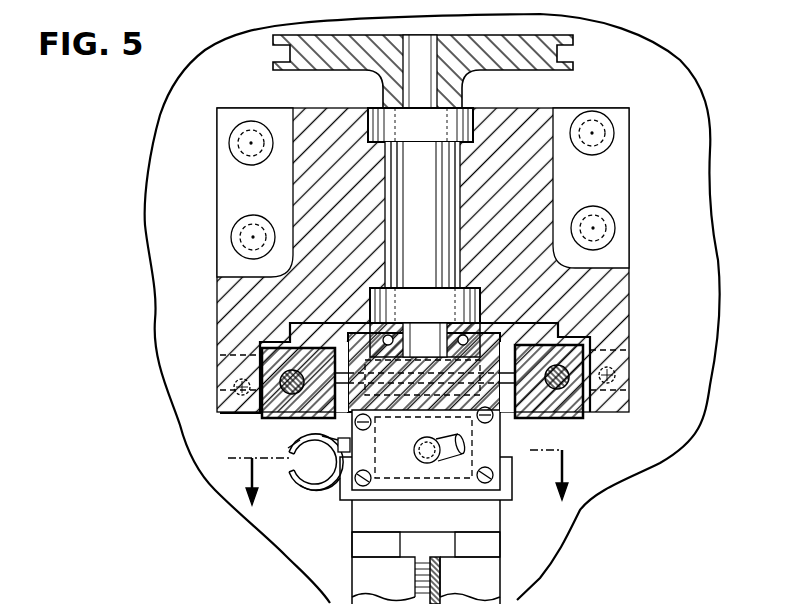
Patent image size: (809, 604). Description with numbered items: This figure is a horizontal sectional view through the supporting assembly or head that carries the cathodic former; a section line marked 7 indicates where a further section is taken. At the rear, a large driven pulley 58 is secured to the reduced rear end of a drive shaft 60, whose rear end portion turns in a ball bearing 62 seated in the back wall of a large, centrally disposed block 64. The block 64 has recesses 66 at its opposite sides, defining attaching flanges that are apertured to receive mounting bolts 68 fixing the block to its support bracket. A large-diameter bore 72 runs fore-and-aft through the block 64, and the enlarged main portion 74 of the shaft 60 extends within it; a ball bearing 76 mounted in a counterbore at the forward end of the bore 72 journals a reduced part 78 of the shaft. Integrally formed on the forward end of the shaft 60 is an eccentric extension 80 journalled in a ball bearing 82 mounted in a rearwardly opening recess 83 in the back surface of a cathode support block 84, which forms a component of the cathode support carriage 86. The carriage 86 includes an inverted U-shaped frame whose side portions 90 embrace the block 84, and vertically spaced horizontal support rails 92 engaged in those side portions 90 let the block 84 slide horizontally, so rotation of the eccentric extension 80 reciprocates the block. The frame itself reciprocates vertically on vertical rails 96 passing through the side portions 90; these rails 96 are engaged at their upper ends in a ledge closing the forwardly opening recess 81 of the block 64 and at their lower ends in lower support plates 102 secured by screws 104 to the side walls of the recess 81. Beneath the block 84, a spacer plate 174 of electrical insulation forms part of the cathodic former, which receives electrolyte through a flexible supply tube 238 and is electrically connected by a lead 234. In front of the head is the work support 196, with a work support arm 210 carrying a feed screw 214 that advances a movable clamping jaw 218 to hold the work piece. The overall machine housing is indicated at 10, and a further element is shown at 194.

The housing 10 is at (600, 468).
The large driven pulley 58 is at (517, 62).
The drive shaft 60 is at (402, 53).
The ball bearing 62 is at (425, 132).
The block 64 is at (423, 260).
The recesses 66 is at (293, 210).
The mounting bolts 68 is at (231, 237).
The large-diameter bore 72 is at (461, 250).
The enlarged main portion of shaft 74 is at (437, 218).
The ball bearing 76 is at (478, 290).
The reduced part of shaft 78 is at (447, 290).
The eccentric extension 80 is at (452, 323).
The forwardly opening recess 81 is at (327, 332).
The ball bearing 82 is at (540, 321).
The rearwardly opening recess 83 is at (425, 305).
The cathode support block 84 is at (393, 402).
The cathode support carriage 86 is at (560, 450).
The side portions of frame 90 is at (280, 392).
The support rails 92 is at (319, 462).
The vertical rails 96 is at (255, 418).
The lower support plates 102 is at (250, 350).
The screws 104 is at (228, 392).
The spacer plate 174 is at (395, 460).
The clip lower arm 194 is at (323, 490).
The work support 196 is at (345, 578).
The work support arm 210 is at (500, 573).
The feed screw 214 is at (442, 580).
The clamping jaw 218 is at (490, 512).
The lead 234 is at (292, 495).
The electrolyte supply tube 238 is at (435, 465).
The section line 7- 7 is at (404, 481).